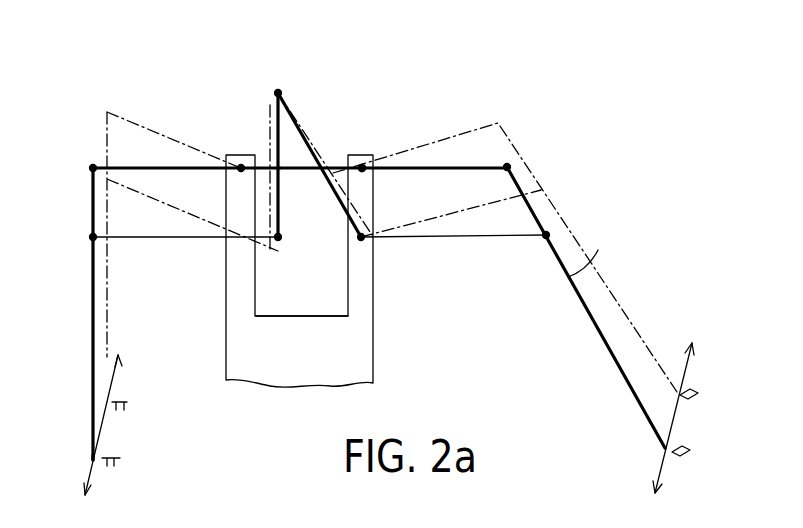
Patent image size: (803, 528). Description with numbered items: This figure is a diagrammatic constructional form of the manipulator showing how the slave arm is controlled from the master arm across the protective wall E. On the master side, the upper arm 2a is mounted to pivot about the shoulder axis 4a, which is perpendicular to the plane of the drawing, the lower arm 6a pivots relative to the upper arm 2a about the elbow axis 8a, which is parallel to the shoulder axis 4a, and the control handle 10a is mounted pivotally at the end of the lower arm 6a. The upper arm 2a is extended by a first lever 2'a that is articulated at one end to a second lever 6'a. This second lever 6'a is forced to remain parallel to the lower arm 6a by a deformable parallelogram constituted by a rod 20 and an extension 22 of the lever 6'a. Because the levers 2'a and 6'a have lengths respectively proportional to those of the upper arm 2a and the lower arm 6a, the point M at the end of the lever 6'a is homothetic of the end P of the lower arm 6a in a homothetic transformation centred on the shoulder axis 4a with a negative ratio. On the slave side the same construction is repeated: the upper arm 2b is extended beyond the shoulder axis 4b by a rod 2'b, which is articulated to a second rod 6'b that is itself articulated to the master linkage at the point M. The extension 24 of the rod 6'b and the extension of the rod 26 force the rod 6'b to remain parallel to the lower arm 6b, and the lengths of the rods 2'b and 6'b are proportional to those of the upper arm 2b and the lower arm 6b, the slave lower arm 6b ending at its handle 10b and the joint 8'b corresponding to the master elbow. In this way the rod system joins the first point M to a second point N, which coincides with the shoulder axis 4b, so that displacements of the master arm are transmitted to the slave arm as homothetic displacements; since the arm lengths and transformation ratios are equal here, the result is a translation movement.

The upper arm 2a is at (151, 167).
The first lever 2'a is at (186, 187).
The upper arm 2b is at (468, 165).
The rod 2'b is at (392, 164).
The shoulder axis 4a is at (241, 166).
The shoulder axis 4b is at (361, 162).
The lower arm 6a is at (93, 350).
The second lever 6'a is at (268, 137).
The lower arm 6b is at (598, 250).
The second rod 6'b is at (328, 154).
The elbow axis 8a is at (92, 168).
The second pivot joint 8'b is at (545, 153).
The control handle 10a is at (100, 461).
The control handle 10b is at (663, 449).
The rod 20 is at (141, 238).
The extension 22 is at (281, 239).
The extension 24 is at (343, 207).
The rod 26 is at (526, 238).
The point M is at (280, 93).
The point N is at (372, 172).
The protective wall E is at (365, 263).
The point P is at (71, 468).